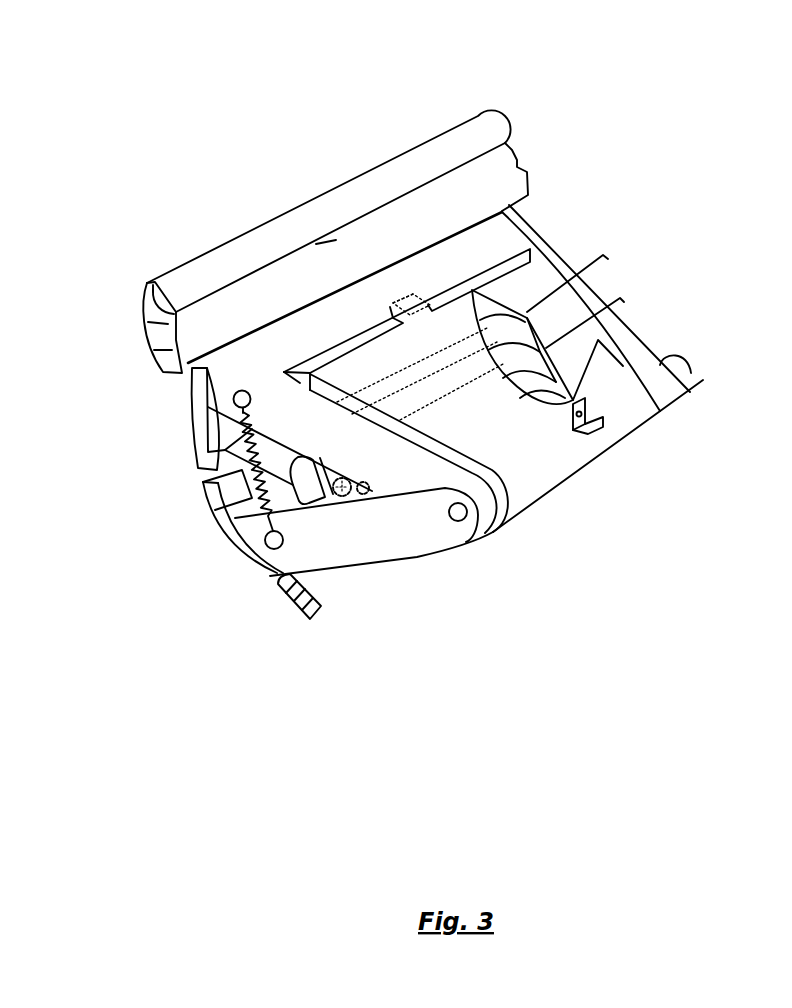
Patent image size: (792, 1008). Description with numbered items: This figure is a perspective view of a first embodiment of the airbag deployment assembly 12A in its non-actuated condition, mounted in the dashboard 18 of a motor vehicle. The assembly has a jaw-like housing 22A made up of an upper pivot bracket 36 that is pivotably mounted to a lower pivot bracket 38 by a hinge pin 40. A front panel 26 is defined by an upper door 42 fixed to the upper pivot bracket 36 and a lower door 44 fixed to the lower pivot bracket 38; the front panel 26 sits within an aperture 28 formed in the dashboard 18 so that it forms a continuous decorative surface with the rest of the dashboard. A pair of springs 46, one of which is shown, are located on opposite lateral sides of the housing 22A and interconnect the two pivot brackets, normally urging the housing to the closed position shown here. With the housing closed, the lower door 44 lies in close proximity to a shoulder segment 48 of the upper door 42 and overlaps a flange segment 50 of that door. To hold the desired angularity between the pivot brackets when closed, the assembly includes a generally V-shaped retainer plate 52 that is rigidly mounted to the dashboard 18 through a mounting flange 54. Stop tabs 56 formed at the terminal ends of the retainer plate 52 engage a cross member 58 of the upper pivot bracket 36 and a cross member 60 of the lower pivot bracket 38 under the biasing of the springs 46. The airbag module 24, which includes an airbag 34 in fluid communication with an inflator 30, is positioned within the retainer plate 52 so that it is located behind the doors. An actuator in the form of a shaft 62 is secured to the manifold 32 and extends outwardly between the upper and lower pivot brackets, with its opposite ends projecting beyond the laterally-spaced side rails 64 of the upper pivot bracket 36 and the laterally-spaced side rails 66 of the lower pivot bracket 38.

The airbag deployment assembly 12A is at (537, 518).
The dashboard 18 is at (477, 127).
The housing 22A is at (465, 541).
The airbag module 24 is at (356, 557).
The front panel 26 is at (180, 447).
The aperture 28 is at (167, 375).
The inflator 30 is at (363, 498).
The manifold 32 is at (343, 477).
The airbag 34 is at (308, 463).
The upper pivot bracket 36 is at (540, 224).
The lower pivot bracket 38 is at (446, 563).
The hinge pin 40 is at (467, 513).
The upper door 42 is at (192, 405).
The lower door 44 is at (250, 557).
The springs 46 is at (268, 522).
The shoulder segment 48 is at (208, 367).
The flange segment 50 is at (203, 484).
The retainer plate 52 is at (613, 368).
The mounting flange 54 is at (604, 424).
The stop tabs 56 is at (411, 293).
The cross member 58 is at (363, 307).
The cross member 60 is at (252, 518).
The shaft 62 is at (372, 496).
The side rails 64 is at (597, 330).
The side rails 66 is at (687, 373).